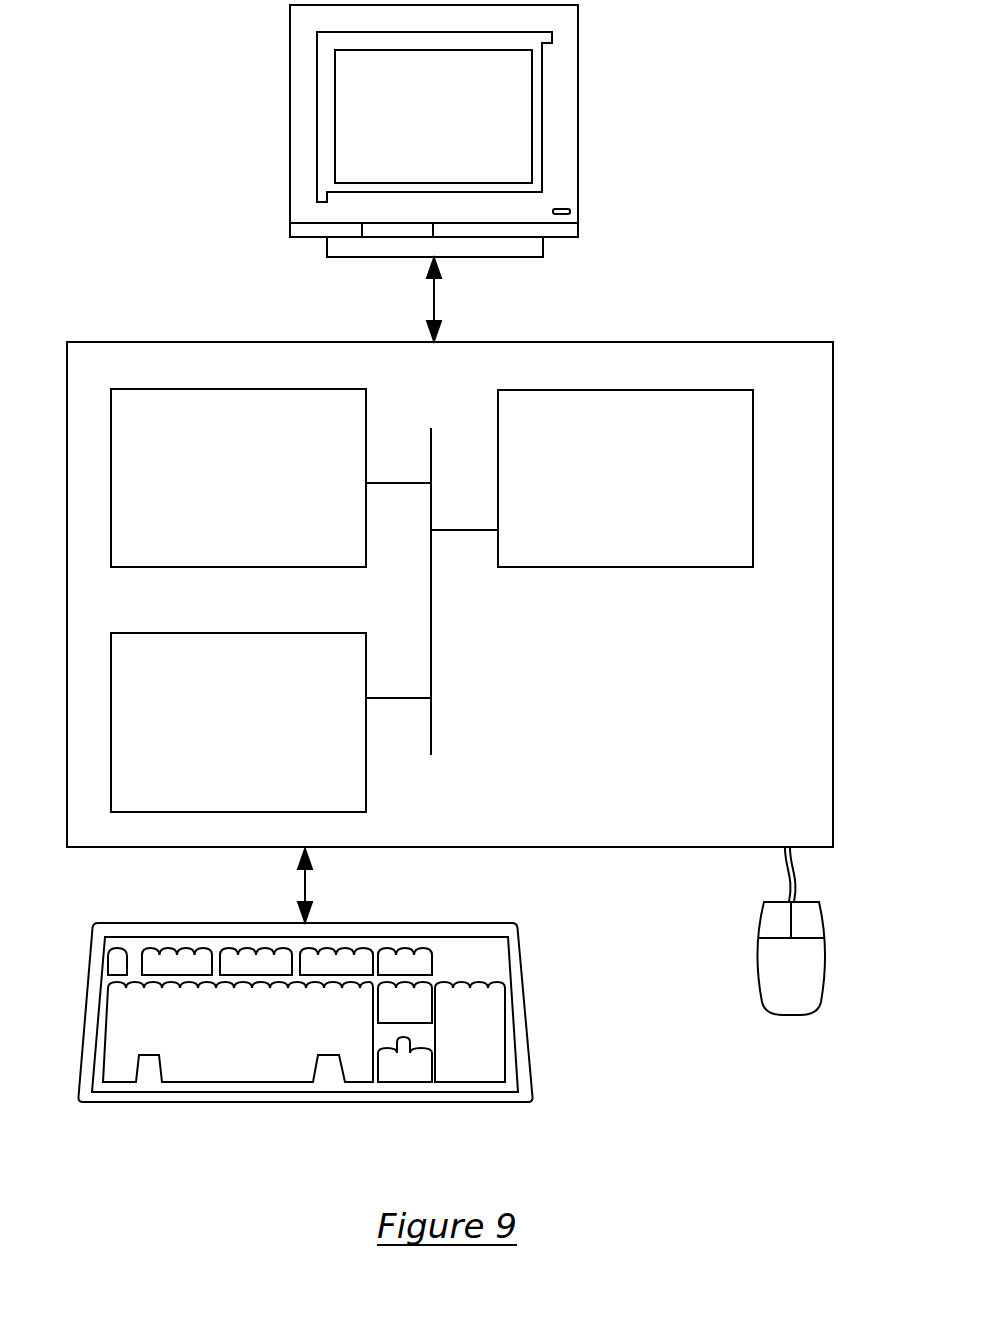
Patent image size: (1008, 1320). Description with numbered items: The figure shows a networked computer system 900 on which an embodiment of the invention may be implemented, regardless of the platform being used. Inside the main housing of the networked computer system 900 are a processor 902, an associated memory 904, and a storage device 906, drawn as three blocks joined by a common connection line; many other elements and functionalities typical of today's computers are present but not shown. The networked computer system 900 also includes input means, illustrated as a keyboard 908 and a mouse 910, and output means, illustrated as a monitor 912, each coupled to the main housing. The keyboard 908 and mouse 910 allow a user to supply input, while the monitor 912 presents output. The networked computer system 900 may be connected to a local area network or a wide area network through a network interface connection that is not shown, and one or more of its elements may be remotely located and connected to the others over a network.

The networked computer system 900 is at (777, 227).
The processor 902 is at (598, 483).
The memory 904 is at (215, 491).
The storage device 906 is at (210, 738).
The keyboard 908 is at (203, 1059).
The mouse 910 is at (765, 984).
The monitor 912 is at (408, 134).